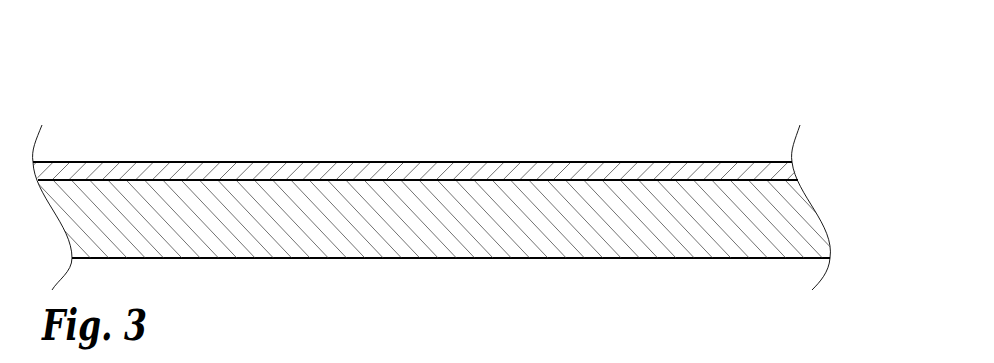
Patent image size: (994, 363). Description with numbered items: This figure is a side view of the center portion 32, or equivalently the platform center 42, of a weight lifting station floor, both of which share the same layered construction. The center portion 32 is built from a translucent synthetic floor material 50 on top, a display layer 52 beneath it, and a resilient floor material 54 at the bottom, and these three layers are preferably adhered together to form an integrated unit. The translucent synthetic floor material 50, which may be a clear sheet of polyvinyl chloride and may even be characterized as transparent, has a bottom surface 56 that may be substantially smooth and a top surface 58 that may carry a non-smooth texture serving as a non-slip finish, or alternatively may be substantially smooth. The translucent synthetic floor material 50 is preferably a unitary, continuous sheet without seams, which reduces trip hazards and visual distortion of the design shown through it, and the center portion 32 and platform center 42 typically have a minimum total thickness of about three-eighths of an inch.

The center portion 32 is at (642, 88).
The platform center 42 is at (740, 112).
The translucent synthetic floor material 50 is at (408, 170).
The display layer 52 is at (556, 181).
The resilient floor material 54 is at (485, 232).
The bottom surface 56 is at (123, 181).
The top surface 58 is at (223, 162).